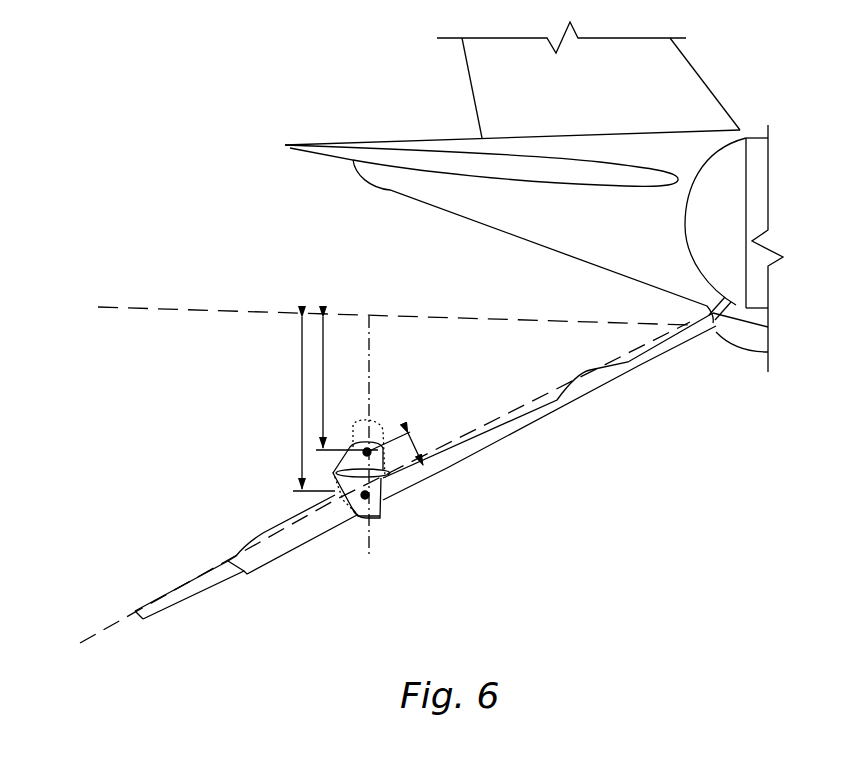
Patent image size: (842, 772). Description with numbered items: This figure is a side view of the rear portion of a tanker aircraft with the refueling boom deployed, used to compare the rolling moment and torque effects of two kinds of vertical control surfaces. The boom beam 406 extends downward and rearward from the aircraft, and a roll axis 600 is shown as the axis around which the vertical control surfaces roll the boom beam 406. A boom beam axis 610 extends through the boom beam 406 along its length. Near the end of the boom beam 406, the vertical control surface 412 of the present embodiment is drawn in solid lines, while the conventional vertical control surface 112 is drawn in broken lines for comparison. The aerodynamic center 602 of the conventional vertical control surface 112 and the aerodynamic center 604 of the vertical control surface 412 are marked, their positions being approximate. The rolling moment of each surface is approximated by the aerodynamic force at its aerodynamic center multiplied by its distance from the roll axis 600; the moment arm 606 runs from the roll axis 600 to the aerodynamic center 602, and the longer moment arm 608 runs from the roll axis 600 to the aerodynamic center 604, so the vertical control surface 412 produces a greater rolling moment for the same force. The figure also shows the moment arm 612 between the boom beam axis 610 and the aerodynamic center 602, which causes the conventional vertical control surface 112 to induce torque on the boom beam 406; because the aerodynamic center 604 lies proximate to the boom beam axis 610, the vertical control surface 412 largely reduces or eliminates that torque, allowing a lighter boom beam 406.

The roll axis 600 is at (205, 310).
The boom beam axis 610 is at (124, 623).
The boom beam 406 is at (290, 535).
The conventional vertical control surface 112 is at (375, 433).
The vertical control surface 412 is at (357, 515).
The aerodynamic center 602 is at (372, 456).
The aerodynamic center 604 is at (369, 498).
The moment arm 608 is at (301, 391).
The moment arm 606 is at (349, 378).
The moment arm 612 is at (423, 457).